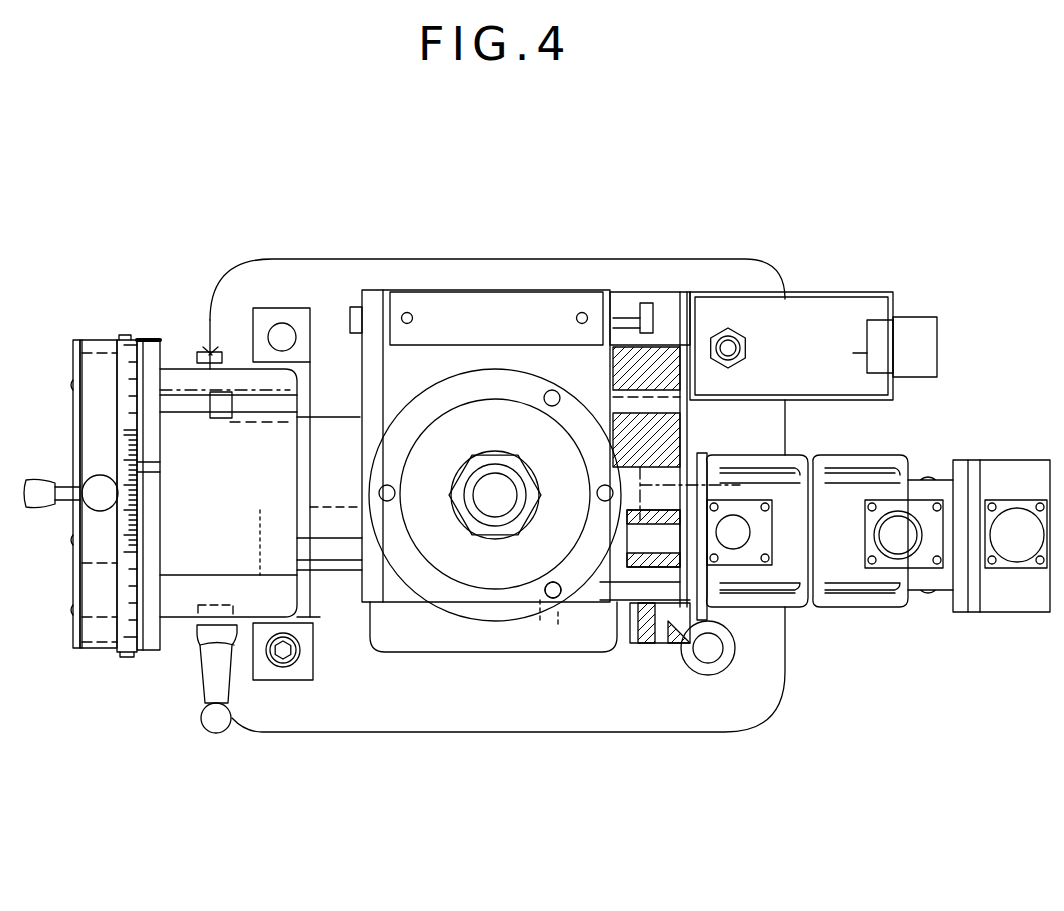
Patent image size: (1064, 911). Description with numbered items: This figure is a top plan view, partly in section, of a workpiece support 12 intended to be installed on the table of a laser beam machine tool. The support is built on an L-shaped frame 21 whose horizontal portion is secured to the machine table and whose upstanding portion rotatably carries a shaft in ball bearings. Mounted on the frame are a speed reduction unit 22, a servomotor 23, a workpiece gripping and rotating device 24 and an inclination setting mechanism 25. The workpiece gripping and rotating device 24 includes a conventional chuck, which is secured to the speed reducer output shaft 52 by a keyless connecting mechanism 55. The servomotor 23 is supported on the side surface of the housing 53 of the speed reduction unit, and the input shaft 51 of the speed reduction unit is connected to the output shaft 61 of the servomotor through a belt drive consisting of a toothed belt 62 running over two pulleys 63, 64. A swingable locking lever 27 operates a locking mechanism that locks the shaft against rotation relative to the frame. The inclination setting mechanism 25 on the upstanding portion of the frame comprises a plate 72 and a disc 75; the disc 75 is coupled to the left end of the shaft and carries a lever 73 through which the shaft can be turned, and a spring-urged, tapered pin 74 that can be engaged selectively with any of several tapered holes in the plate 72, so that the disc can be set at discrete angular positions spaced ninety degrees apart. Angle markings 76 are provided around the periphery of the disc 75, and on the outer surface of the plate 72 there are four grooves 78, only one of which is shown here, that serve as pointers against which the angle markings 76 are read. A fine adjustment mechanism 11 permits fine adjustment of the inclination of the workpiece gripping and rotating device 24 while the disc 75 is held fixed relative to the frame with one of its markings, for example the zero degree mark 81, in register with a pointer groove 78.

The workpiece support 12 is at (370, 242).
The frame 21 is at (307, 733).
The speed reduction unit 22 is at (540, 290).
The servomotor 23 is at (813, 457).
The workpiece gripping and rotating device 24 is at (453, 605).
The inclination setting mechanism 25 is at (93, 338).
The locking lever 27 is at (217, 733).
The fine adjustment mechanism 11 is at (193, 658).
The input shaft 51 is at (610, 397).
The speed reducer output shaft 52 is at (495, 477).
The housing 53 is at (428, 290).
The keyless connecting mechanism 55 is at (467, 530).
The output shaft 61 is at (603, 573).
The toothed belt 62 is at (770, 467).
The pulley 63 is at (712, 604).
The pulley 64 is at (693, 460).
The plate 72 is at (154, 336).
The lever 73 is at (97, 517).
The pin 74 is at (47, 478).
The disc 75 is at (76, 336).
The angle markings 76 is at (125, 336).
The groove 78 is at (160, 493).
The zero degree mark 81 is at (140, 467).